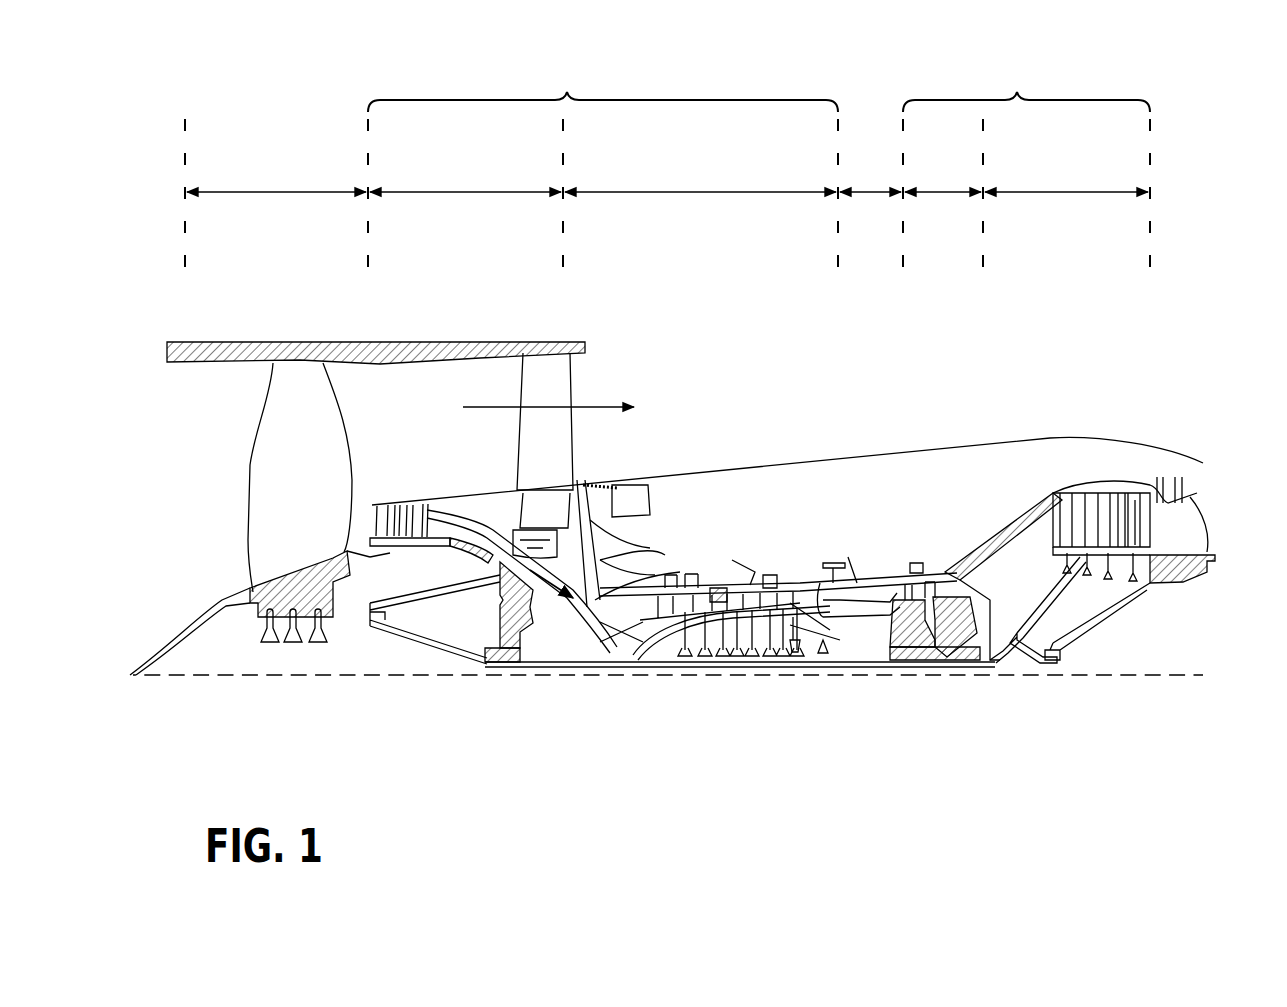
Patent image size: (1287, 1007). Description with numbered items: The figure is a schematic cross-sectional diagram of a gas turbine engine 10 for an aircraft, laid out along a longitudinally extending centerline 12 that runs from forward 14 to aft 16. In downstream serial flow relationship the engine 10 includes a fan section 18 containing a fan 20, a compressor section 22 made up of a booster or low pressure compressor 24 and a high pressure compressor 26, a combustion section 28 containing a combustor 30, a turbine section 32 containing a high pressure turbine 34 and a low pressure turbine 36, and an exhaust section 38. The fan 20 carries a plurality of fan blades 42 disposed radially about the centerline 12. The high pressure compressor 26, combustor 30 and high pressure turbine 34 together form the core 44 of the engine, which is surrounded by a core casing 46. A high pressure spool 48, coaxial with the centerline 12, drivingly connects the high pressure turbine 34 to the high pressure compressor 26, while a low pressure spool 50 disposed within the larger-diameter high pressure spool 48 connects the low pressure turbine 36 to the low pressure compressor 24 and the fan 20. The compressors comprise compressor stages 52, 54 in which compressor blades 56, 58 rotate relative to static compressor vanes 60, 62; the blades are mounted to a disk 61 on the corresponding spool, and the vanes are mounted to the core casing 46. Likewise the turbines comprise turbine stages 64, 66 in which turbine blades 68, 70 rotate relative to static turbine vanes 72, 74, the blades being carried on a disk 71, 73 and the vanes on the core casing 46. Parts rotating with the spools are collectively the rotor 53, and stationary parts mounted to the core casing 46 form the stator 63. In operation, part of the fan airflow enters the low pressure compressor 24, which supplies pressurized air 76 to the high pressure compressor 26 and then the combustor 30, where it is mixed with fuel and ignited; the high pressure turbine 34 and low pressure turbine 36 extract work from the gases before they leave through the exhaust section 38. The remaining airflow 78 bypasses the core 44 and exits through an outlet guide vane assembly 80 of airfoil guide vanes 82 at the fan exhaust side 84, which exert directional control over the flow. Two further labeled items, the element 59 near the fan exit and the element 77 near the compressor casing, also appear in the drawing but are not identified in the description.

The gas turbine engine 10 is at (862, 335).
The centerline 12 is at (278, 675).
The forward 14 is at (160, 466).
The aft 16 is at (1253, 537).
The fan section 18 is at (276, 180).
The fan 20 is at (220, 533).
The compressor section 22 is at (603, 88).
The low pressure compressor 24 is at (465, 180).
The high pressure compressor 26 is at (700, 180).
The combustion section 28 is at (870, 174).
The combustor 30 is at (870, 598).
The turbine section 32 is at (1026, 88).
The high pressure turbine 34 is at (943, 179).
The low pressure turbine 36 is at (1066, 179).
The exhaust section 38 is at (1220, 497).
The fan blades 42 is at (327, 413).
The core 44 is at (818, 498).
The core casing 46 is at (1028, 512).
The HP spool 48 is at (852, 640).
The LP spool 50 is at (503, 667).
The compressor stages 52 is at (427, 447).
The rotor 53 is at (458, 555).
The compressor stages 54 is at (685, 494).
The compressor blades 56 is at (400, 508).
The compressor blades 58 is at (612, 580).
The splitter 59 is at (400, 548).
The compressor vanes 60 is at (378, 506).
The disk 61 is at (632, 635).
The compressor vanes 62 is at (620, 578).
The stator 63 is at (1087, 480).
The turbine stages 64 is at (960, 522).
The turbine stages 66 is at (1133, 390).
The turbine blades 68 is at (930, 582).
The turbine blades 70 is at (1137, 500).
The disk 71 is at (917, 640).
The turbine vanes 72 is at (906, 582).
The disk 73 is at (1062, 545).
The turbine vanes 74 is at (1120, 500).
The pressurized air 76 is at (570, 580).
The bleed flow 77 is at (717, 573).
The airflow 78 is at (487, 407).
The outlet guide vane assembly 80 is at (590, 450).
The airfoil guide vanes 82 is at (528, 442).
The fan exhaust side 84 is at (612, 365).